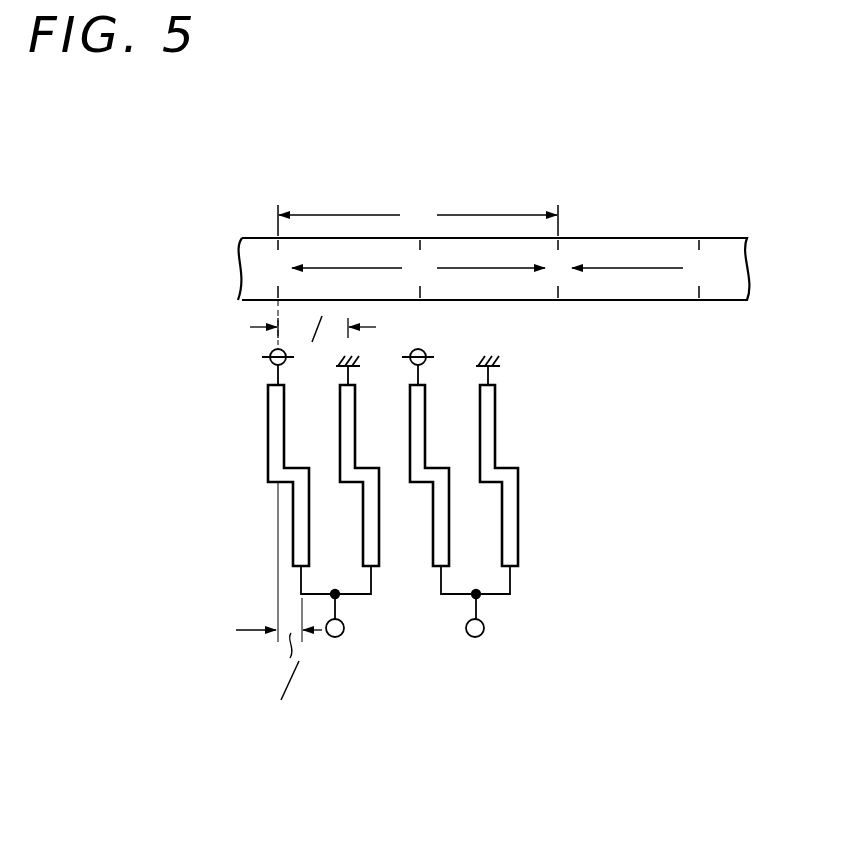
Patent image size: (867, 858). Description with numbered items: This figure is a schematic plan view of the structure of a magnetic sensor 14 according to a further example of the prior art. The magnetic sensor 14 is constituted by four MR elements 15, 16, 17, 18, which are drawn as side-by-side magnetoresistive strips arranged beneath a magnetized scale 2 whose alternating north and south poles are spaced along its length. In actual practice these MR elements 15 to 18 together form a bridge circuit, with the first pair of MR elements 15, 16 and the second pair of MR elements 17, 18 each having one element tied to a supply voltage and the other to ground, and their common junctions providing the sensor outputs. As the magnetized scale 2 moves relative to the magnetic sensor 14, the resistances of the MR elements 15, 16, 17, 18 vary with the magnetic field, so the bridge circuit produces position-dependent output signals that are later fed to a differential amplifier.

The magnetic scale (magnetized medium with N/S poles) 2 is at (613, 238).
The magnetic sensor 14 is at (412, 503).
The MR element 15 is at (272, 430).
The MR element 16 is at (356, 431).
The MR element 17 is at (426, 431).
The MR element 18 is at (496, 431).